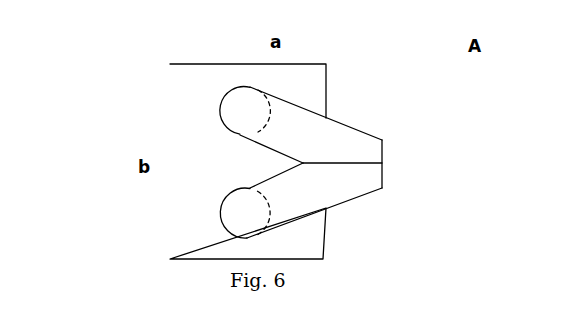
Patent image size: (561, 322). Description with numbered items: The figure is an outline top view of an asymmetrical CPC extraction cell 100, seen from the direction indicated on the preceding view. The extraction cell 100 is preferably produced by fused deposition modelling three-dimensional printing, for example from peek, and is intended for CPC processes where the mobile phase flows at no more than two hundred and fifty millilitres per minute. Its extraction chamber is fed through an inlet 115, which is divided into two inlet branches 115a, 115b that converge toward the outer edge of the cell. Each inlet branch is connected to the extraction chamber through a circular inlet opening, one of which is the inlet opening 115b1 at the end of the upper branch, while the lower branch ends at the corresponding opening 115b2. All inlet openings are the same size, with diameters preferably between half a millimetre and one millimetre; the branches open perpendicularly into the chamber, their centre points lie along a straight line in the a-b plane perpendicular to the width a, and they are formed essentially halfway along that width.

The extraction cell 100 is at (190, 142).
The inlet 115 is at (383, 167).
The inlet branch 115a is at (332, 197).
The inlet branch 115b is at (363, 145).
The inlet opening 115b1 is at (238, 102).
The lower cylindrical end portion 115b2 is at (237, 214).